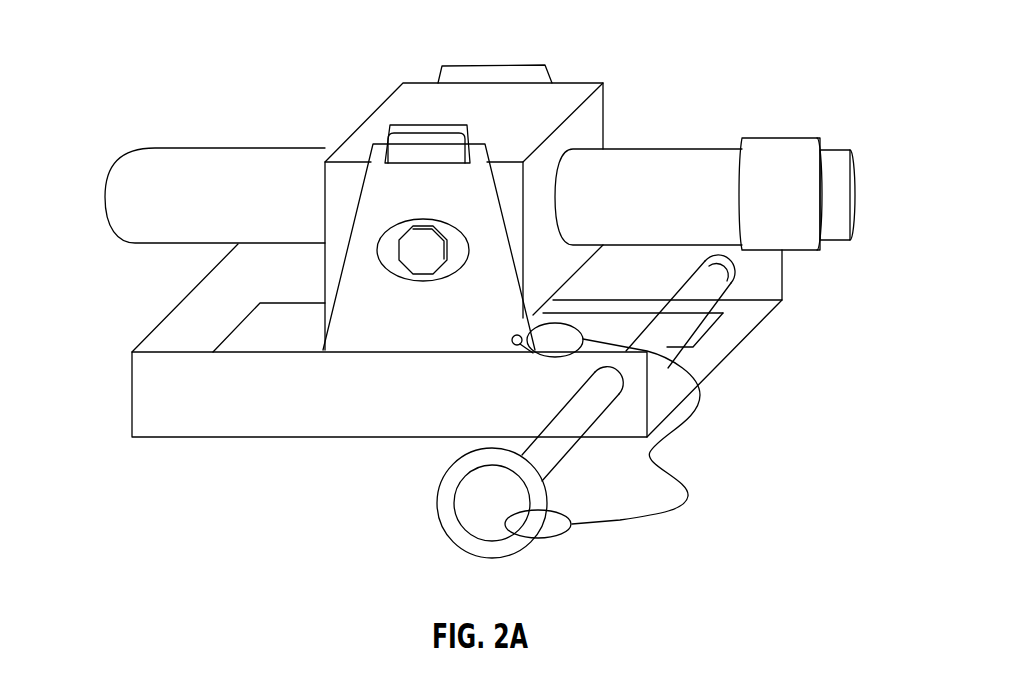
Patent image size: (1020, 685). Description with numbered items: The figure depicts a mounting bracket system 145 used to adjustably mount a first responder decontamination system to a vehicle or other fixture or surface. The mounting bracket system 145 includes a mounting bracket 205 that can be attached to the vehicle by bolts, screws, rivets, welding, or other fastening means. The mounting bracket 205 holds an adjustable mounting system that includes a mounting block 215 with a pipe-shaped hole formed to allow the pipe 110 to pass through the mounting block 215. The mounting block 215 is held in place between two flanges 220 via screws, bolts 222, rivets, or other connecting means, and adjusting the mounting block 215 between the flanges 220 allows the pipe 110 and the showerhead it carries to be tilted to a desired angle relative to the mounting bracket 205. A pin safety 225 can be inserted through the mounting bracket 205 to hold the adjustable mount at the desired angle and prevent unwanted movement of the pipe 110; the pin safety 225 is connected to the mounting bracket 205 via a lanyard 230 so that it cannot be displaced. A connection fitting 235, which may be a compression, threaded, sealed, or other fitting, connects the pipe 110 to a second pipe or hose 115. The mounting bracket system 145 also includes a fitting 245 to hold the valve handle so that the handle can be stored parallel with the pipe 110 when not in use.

The pipe 110 is at (152, 156).
The second pipe or hose 115 is at (833, 148).
The mounting bracket system 145 is at (656, 52).
The mounting bracket 205 is at (183, 413).
The mounting block 215 is at (383, 121).
The flanges 220 is at (453, 74).
The bolts 222 is at (432, 260).
The pin safety 225 is at (470, 553).
The lanyard 230 is at (650, 516).
The connection fitting 235 is at (783, 252).
The fitting 245 is at (375, 158).